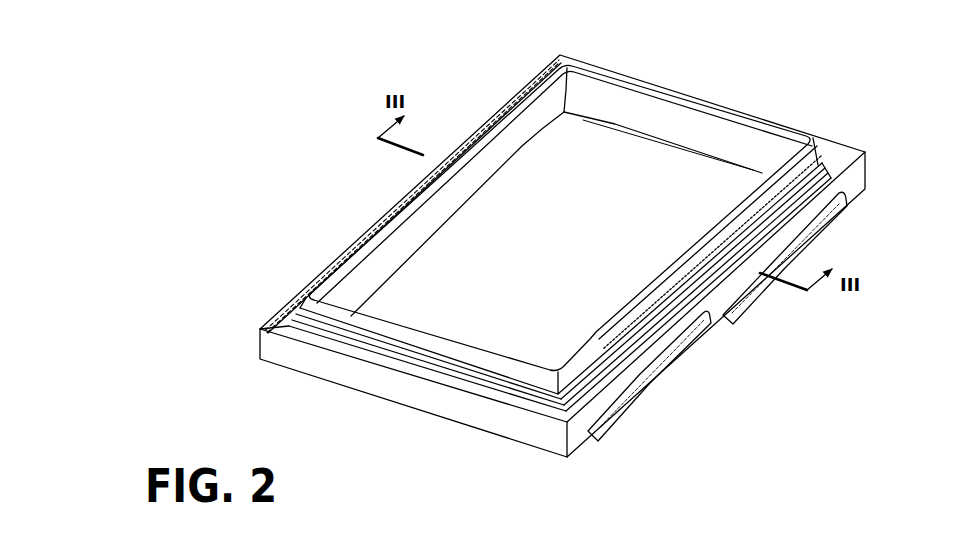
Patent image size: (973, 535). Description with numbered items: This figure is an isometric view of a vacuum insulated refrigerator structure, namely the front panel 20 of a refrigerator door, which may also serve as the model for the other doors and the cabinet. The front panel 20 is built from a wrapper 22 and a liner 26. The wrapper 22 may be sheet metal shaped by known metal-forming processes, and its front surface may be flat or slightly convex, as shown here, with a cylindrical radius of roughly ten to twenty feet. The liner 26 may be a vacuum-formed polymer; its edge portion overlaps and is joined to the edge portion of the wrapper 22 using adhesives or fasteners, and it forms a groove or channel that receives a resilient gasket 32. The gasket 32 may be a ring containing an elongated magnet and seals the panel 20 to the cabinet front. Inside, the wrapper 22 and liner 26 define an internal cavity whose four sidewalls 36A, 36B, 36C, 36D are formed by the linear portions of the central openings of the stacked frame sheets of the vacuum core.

The front panel 20 is at (773, 108).
The wrapper 22 is at (610, 425).
The liner 26 is at (353, 242).
The resilient gasket 32 is at (262, 333).
The sidewall 36A is at (500, 137).
The sidewall 36B is at (688, 118).
The sidewall 36C is at (722, 195).
The sidewall 36D is at (437, 340).